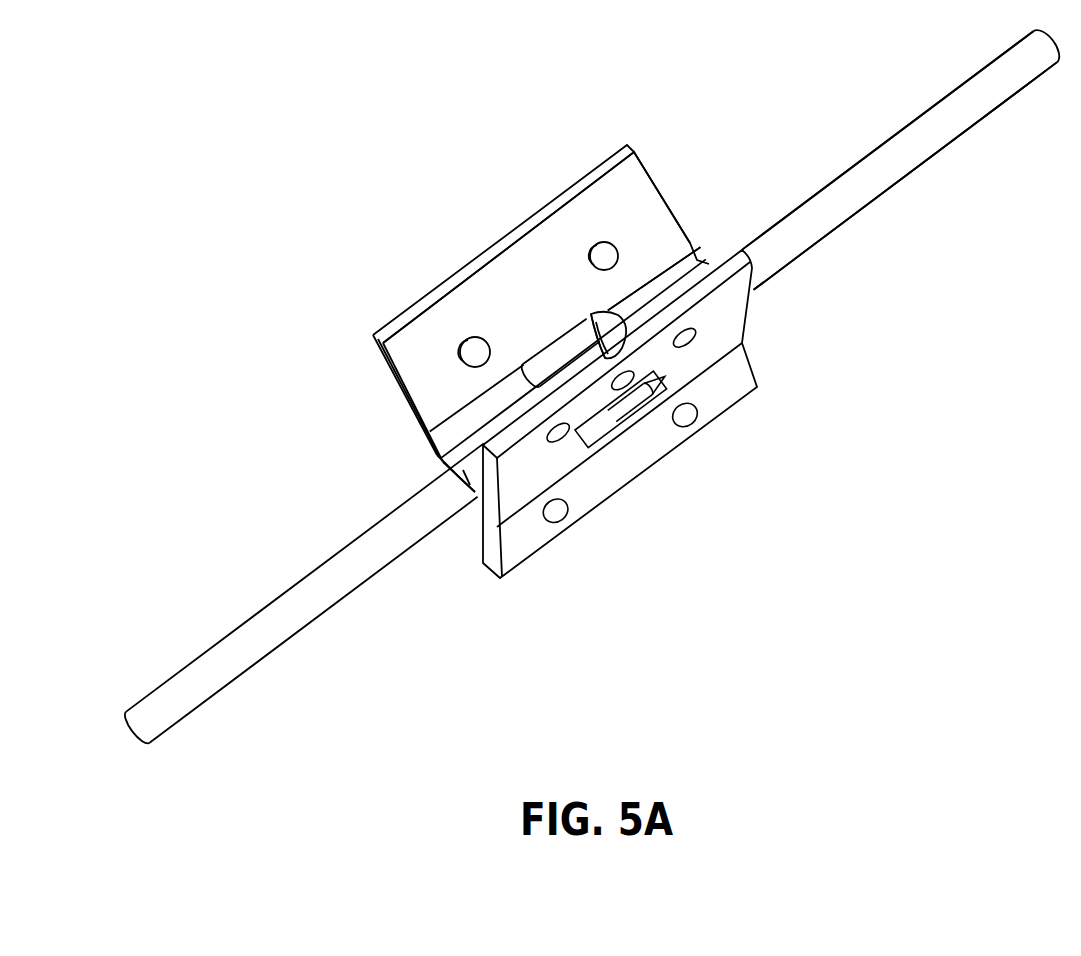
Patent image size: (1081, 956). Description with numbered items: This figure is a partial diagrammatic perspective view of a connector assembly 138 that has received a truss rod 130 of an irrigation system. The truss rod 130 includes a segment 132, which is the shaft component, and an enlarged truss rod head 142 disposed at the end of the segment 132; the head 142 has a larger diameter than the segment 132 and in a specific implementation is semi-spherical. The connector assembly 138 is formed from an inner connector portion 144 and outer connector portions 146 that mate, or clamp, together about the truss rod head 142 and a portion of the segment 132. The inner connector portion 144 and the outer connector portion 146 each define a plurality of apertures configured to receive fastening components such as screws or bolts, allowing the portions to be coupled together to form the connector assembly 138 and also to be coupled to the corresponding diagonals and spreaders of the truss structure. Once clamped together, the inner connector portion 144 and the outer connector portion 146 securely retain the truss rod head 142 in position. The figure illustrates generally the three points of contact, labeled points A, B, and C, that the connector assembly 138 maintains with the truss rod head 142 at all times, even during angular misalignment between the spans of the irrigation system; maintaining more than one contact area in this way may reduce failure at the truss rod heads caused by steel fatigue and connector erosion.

The truss rod 130 is at (937, 86).
The segment 132 is at (298, 595).
The connector assembly 138 is at (503, 227).
The truss rod head 142 is at (588, 322).
The inner connector portion 144 is at (632, 200).
The outer connector portion 146 is at (735, 412).
The point A is at (655, 315).
The point B is at (646, 400).
The point C is at (590, 326).